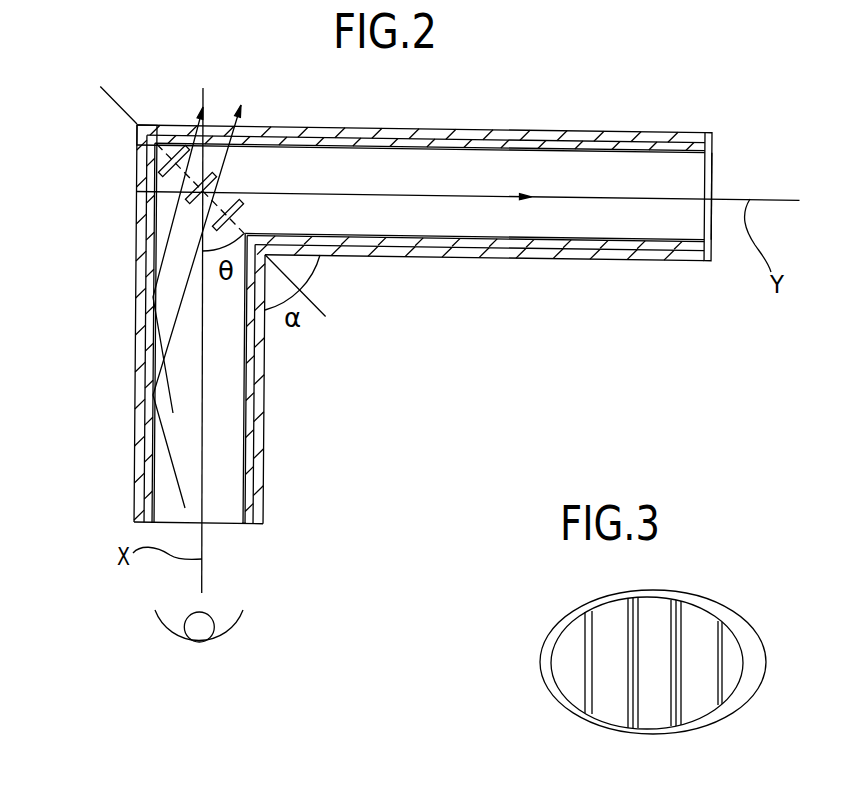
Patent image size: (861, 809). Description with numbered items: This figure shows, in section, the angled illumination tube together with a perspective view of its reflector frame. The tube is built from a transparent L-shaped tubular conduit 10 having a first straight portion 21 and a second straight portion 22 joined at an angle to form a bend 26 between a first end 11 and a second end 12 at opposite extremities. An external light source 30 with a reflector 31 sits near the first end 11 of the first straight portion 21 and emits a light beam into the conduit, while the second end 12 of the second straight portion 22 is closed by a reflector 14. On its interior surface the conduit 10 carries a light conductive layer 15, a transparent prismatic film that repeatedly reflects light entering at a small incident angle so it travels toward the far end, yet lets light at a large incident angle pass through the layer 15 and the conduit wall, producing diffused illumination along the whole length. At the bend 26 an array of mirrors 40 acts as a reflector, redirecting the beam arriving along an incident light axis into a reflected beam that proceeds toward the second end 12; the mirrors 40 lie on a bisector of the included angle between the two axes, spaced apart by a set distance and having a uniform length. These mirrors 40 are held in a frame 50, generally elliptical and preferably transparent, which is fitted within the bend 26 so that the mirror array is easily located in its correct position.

In FIG. 2, the transparent L-shaped tubular conduit 10 is at (472, 177).
In FIG. 2, the first end 11 is at (187, 326).
In FIG. 2, the second end 12 is at (712, 130).
In FIG. 2, the reflector 14 is at (712, 172).
In FIG. 2, the light conductive layer 15 is at (557, 233).
In FIG. 2, the first straight portion 21 is at (135, 350).
In FIG. 2, the second straight portion 22 is at (610, 130).
In FIG. 2, the bend 26 is at (148, 125).
In FIG. 2, the external light source 30 is at (162, 632).
In FIG. 2, the reflector 31 is at (237, 633).
In FIG. 2, the mirrors 40 is at (165, 163).
In FIG. 3, the mirrors 40 is at (700, 662).
In FIG. 2, the frame 50 is at (177, 191).
In FIG. 3, the frame 50 is at (717, 605).